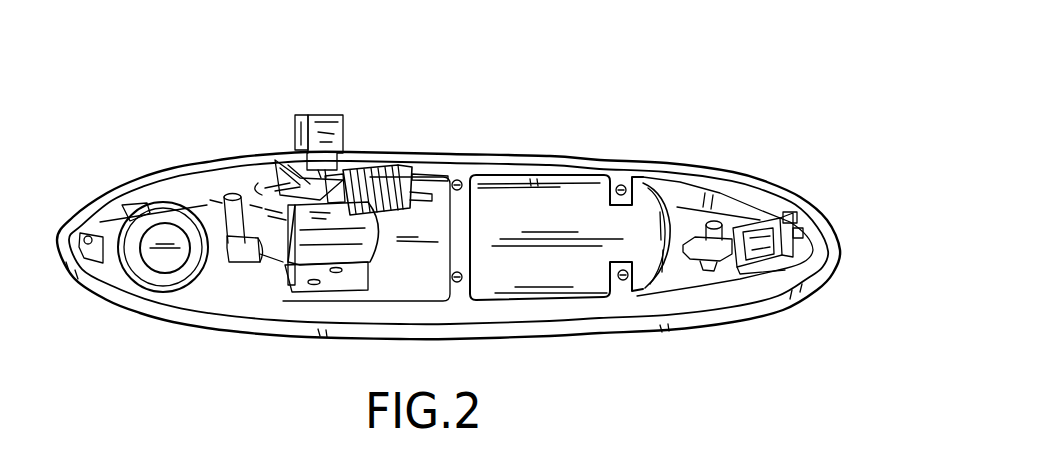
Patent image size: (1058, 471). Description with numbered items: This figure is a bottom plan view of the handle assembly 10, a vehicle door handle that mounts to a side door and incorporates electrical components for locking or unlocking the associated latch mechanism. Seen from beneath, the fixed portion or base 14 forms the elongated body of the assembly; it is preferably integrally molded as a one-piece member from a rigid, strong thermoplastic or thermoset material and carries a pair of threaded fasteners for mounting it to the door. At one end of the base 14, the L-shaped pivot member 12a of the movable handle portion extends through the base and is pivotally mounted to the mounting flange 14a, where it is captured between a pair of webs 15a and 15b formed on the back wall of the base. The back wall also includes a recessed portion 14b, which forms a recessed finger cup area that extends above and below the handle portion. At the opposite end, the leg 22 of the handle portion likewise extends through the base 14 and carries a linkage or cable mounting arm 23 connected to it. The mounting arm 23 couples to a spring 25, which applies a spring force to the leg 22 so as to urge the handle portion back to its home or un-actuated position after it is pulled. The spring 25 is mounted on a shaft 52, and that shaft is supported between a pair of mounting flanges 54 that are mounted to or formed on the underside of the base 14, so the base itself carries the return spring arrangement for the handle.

The handle assembly 10 is at (558, 128).
The fixed portion (base) 14 is at (706, 160).
The mounting flange 14a is at (570, 205).
The recessed portion 14b is at (543, 273).
The L-shaped pivot member 12a is at (789, 220).
The web 15a is at (742, 215).
The web 15b is at (747, 262).
The leg 22 is at (325, 228).
The linkage or cable mounting arm 23 is at (313, 112).
The spring 25 is at (364, 153).
The shaft 52 is at (418, 170).
The mounting flanges 54 is at (300, 178).